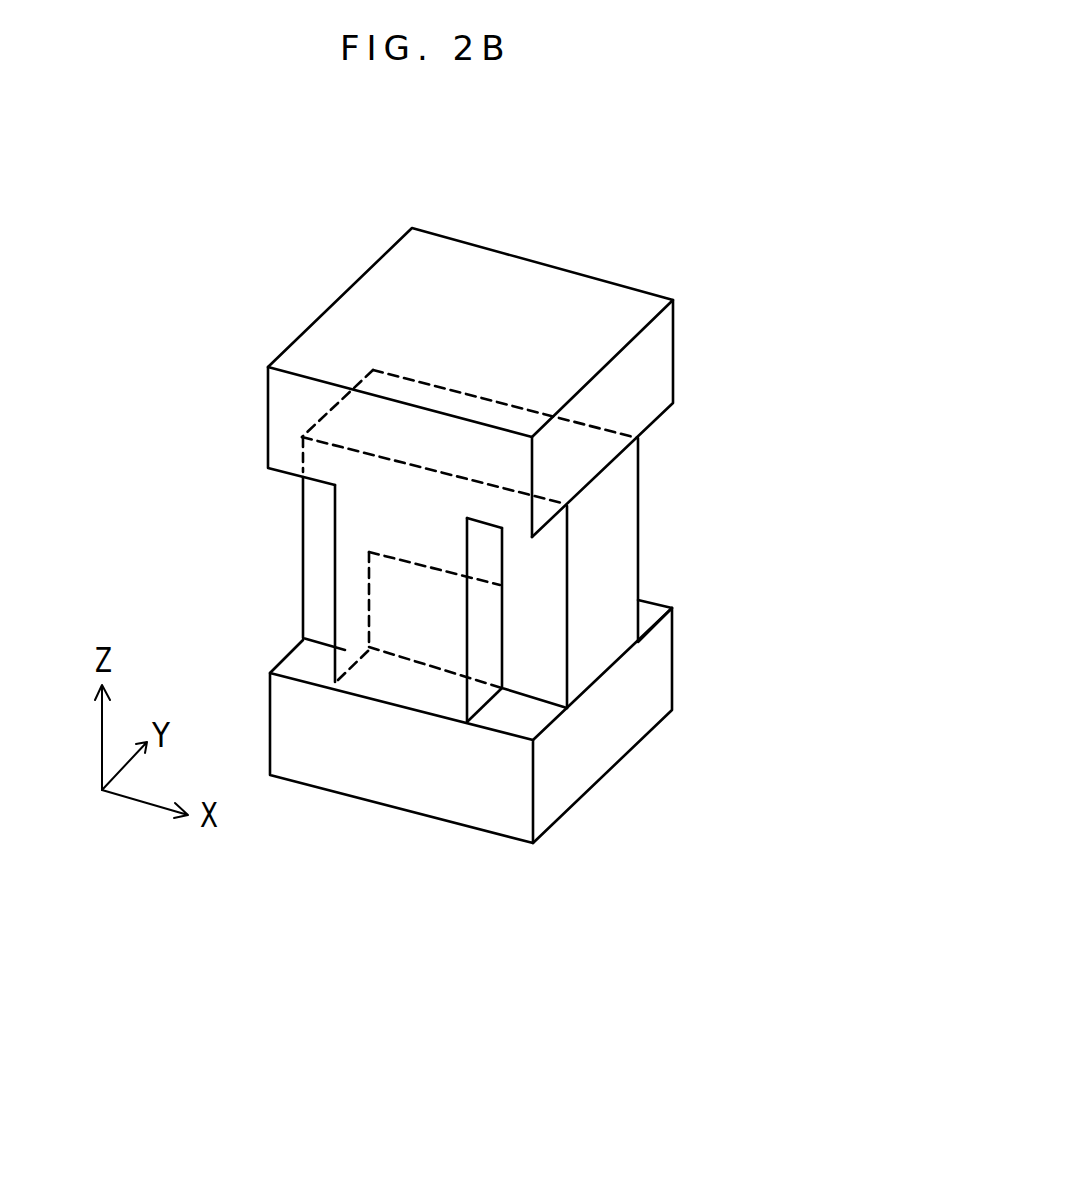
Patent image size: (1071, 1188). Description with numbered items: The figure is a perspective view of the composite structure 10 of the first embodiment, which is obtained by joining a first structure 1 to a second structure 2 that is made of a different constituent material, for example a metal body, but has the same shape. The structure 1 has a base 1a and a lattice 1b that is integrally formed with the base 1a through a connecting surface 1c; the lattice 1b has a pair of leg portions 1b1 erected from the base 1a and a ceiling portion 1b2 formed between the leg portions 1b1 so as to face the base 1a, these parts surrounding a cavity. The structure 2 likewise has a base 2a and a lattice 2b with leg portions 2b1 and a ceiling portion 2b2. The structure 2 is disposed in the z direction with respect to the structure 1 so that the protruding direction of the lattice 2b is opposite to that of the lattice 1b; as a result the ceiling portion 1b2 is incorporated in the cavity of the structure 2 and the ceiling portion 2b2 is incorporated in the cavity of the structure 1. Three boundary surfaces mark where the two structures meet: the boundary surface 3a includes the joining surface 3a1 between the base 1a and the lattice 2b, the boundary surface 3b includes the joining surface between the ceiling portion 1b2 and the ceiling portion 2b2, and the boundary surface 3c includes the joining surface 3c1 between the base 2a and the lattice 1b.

The composite structure 10 is at (713, 204).
The structure 1 is at (378, 828).
The base 1a is at (402, 793).
The lattice 1b is at (580, 593).
The leg portions 1b1 is at (523, 552).
The ceiling portion 1b2 is at (405, 510).
The connecting surface 1c is at (580, 762).
The structure 2 is at (547, 260).
The base 2a is at (610, 398).
The lattice 2b is at (477, 558).
The leg portions 2b1 is at (477, 623).
The ceiling portion 2b2 is at (497, 667).
The boundary surface 3a is at (373, 655).
The joining surface 3a1 is at (405, 683).
The boundary surface 3b is at (423, 558).
The boundary surface 3c is at (373, 457).
The joining surface 3c1 is at (612, 468).